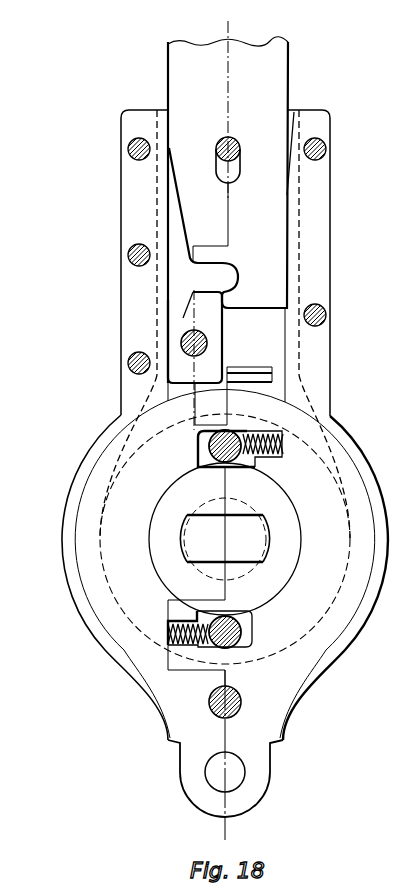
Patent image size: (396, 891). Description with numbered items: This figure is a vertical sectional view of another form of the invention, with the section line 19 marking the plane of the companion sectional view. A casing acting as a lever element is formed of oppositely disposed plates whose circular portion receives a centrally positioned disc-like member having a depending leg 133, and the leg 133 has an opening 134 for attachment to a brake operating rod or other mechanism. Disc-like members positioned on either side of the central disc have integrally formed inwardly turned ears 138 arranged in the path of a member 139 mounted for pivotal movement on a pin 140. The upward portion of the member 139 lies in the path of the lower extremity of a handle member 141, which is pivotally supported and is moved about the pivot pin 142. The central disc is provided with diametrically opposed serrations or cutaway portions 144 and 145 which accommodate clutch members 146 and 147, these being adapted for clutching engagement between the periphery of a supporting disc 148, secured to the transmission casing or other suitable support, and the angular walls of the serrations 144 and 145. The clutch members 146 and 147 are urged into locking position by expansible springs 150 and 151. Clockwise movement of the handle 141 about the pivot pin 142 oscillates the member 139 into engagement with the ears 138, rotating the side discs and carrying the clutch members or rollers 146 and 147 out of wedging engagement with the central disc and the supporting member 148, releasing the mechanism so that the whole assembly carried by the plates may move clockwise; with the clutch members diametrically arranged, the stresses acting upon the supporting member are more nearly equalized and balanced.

The section line 19 is at (226, 21).
The depending leg 133 is at (253, 792).
The opening 134 is at (205, 783).
The inwardly turned ears 138 is at (272, 371).
The pivotally mounted member 139 is at (183, 318).
The pin 140 is at (183, 353).
The handle member 141 is at (272, 193).
The pivot pin 142 is at (228, 140).
The serration 144 is at (255, 618).
The serration 145 is at (197, 453).
The clutch member 146 is at (243, 636).
The clutch member 147 is at (200, 431).
The supporting disc 148 is at (150, 553).
The expansible spring 150 is at (187, 648).
The expansible spring 151 is at (282, 433).